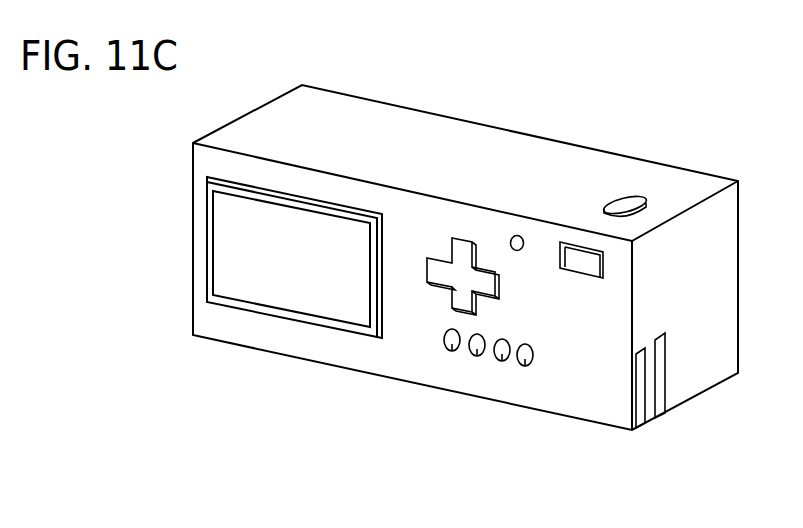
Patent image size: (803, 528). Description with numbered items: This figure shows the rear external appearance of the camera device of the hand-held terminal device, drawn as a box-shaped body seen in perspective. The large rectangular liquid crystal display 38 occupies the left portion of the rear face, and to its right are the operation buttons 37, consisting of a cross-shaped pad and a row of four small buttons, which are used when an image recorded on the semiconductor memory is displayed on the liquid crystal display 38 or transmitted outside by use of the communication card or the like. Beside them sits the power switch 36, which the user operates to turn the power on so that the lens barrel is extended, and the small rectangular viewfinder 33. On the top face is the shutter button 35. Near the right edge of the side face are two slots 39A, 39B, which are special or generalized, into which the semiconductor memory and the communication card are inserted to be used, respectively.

The viewfinder 33 is at (583, 267).
The shutter button 35 is at (622, 203).
The power switch 36 is at (521, 251).
The operation buttons 37 is at (457, 298).
The liquid crystal display 38 is at (357, 302).
The slot 39A is at (643, 422).
The slot 39B is at (662, 410).